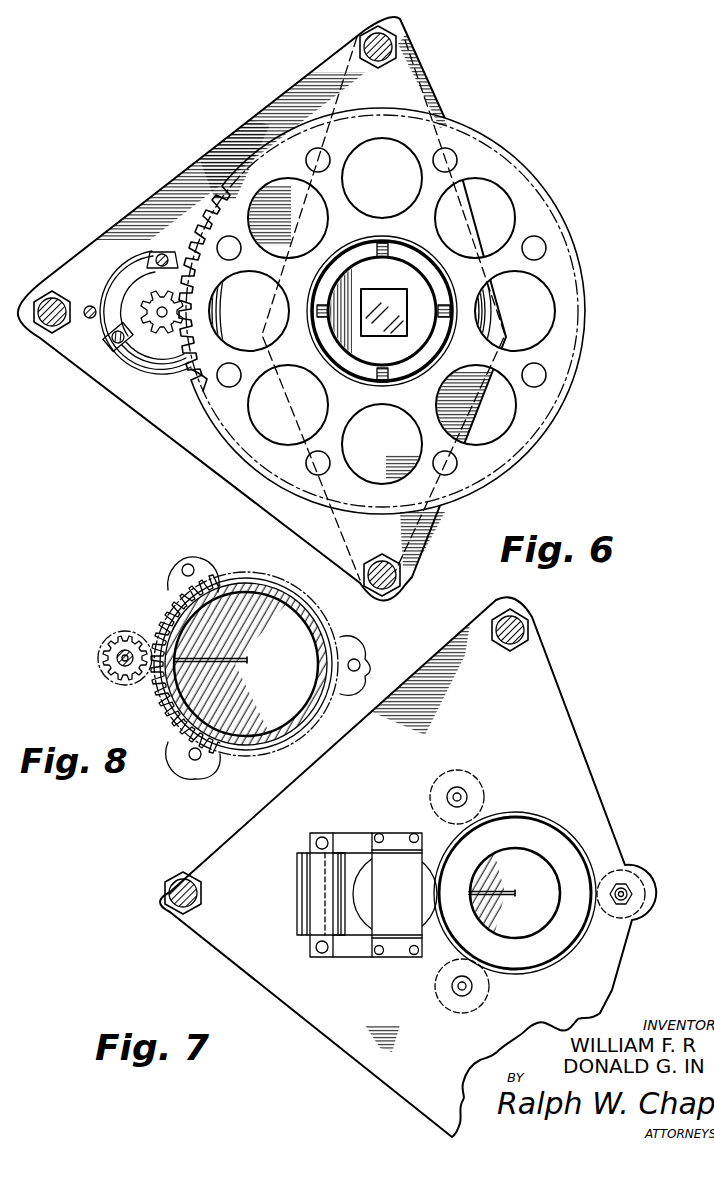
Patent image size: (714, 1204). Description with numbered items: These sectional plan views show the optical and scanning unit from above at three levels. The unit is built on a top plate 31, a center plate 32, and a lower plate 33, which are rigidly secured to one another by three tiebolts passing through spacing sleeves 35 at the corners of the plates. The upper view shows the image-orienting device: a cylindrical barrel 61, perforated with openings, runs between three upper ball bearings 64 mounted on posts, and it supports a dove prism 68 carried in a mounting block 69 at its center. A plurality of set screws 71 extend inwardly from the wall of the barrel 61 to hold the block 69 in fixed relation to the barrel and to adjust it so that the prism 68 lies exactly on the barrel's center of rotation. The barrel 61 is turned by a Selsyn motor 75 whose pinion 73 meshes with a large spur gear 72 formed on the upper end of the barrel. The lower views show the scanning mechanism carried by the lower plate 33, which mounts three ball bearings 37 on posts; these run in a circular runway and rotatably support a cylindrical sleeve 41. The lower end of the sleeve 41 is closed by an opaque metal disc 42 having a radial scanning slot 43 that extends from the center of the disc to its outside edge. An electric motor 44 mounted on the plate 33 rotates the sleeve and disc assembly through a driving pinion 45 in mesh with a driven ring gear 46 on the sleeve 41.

In FIG. 6, the top plate 31 is at (412, 83).
In FIG. 6, the center plate 32 is at (338, 88).
In FIG. 7, the lower plate 33 is at (585, 766).
In FIG. 6, the spacing sleeves 35 is at (398, 40).
In FIG. 7, the spacing sleeves 35 is at (530, 630).
In FIG. 8, the ball bearings 37 is at (175, 582).
In FIG. 7, the ball bearings 37 is at (478, 799).
In FIG. 8, the cylindrical sleeve 41 is at (242, 588).
In FIG. 8, the opaque metal disc 42 is at (244, 664).
In FIG. 7, the opaque metal disc 42 is at (515, 893).
In FIG. 8, the radial scanning slot 43 is at (244, 662).
In FIG. 7, the radial scanning slot 43 is at (516, 895).
In FIG. 7, the electric motor 44 is at (363, 913).
In FIG. 8, the driving pinion 45 is at (140, 640).
In FIG. 8, the driven ring gear 46 is at (153, 686).
In FIG. 6, the cylindrical barrel 61 is at (318, 336).
In FIG. 6, the upper ball bearings 64 is at (493, 311).
In FIG. 6, the dove prism 68 is at (393, 300).
In FIG. 6, the mounting block 69 is at (387, 356).
In FIG. 6, the set screws 71 is at (389, 250).
In FIG. 6, the large spur gear 72 is at (189, 383).
In FIG. 6, the pinion 73 is at (148, 326).
In FIG. 6, the Selsyn motor 75 is at (118, 292).